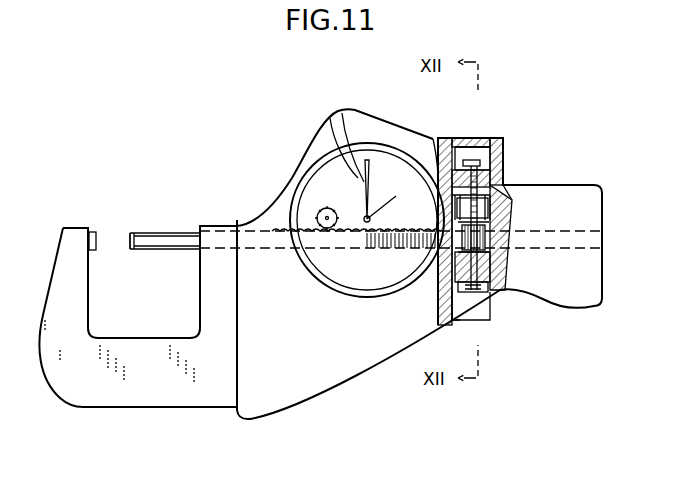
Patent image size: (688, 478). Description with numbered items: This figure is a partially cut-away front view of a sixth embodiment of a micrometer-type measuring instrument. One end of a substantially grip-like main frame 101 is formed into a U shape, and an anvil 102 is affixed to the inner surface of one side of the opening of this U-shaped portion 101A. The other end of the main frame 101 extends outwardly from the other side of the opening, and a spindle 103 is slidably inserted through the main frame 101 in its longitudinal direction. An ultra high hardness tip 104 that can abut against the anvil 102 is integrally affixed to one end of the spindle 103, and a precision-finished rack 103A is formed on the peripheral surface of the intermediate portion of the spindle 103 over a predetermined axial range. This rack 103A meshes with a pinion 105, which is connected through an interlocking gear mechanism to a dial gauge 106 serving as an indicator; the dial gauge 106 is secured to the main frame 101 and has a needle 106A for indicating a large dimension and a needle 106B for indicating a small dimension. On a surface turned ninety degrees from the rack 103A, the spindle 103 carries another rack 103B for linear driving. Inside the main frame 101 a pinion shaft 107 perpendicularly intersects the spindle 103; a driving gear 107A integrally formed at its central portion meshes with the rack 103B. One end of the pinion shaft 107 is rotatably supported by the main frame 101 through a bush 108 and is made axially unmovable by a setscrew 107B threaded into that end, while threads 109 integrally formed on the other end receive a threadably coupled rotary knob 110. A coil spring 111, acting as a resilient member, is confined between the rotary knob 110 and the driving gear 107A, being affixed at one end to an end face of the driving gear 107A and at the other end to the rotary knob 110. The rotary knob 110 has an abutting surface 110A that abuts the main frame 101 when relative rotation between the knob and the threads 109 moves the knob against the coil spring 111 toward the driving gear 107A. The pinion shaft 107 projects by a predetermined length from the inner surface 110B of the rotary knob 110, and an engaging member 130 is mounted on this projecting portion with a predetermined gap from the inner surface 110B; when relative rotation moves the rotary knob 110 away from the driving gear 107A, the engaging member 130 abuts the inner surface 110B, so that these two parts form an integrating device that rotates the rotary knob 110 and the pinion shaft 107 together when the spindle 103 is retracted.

The main frame 101 is at (364, 370).
The U-shaped portion 101A is at (140, 396).
The anvil 102 is at (90, 230).
The spindle 103 is at (180, 238).
The rack 103A is at (312, 228).
The rack for linear driving 103B is at (525, 250).
The ultra high hardness tip 104 is at (129, 233).
The pinion 105 is at (318, 212).
The dial gauge 106 is at (335, 175).
The needle for indicating a large dimension 106A is at (383, 215).
The needle for indicating a small dimension 106B is at (333, 170).
The pinion shaft 107 is at (502, 213).
The driving gear 107A is at (413, 215).
The setscrew 107B is at (480, 292).
The bush 108 is at (520, 292).
The threads 109 is at (508, 172).
The rotary knob 110 is at (503, 152).
The abutting surface 110A is at (505, 187).
The inner surface 110B is at (487, 140).
The coil spring 111 is at (486, 201).
The engaging member 130 is at (474, 160).